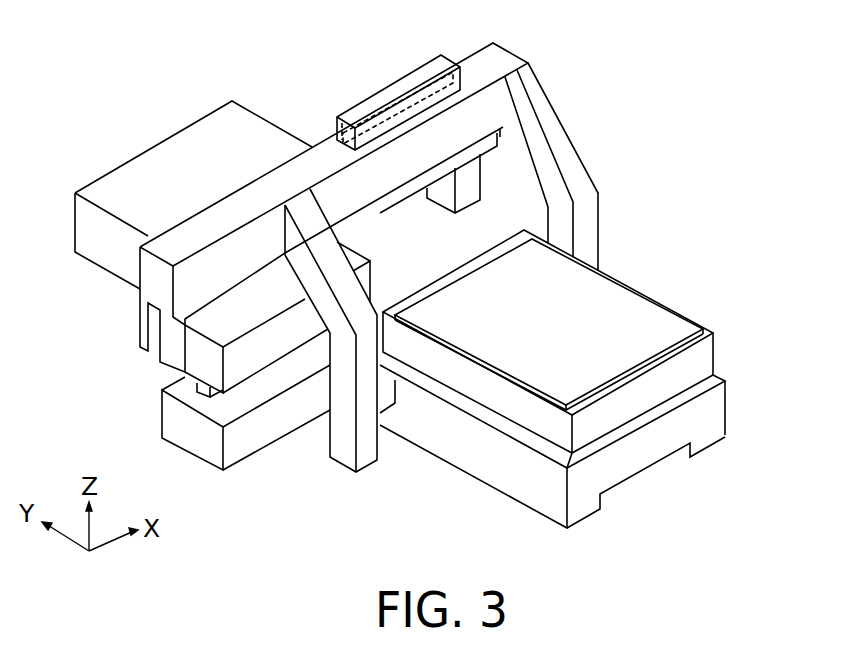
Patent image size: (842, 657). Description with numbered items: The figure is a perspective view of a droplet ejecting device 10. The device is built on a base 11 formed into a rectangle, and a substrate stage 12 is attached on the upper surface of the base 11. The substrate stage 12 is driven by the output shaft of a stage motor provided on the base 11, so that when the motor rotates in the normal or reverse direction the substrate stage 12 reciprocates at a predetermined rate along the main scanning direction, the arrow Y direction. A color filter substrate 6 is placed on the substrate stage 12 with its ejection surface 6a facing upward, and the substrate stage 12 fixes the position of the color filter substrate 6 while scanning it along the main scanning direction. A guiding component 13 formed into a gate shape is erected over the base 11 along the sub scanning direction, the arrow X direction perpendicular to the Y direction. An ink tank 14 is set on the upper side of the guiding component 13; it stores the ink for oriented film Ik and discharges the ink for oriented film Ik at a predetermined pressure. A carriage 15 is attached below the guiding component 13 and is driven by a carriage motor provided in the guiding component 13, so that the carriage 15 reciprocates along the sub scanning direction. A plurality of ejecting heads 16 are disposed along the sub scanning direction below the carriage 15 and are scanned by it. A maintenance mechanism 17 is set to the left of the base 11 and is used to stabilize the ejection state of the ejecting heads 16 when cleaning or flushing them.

The droplet ejecting device 10 is at (713, 105).
The base 11 is at (722, 412).
The substrate stage 12 is at (713, 353).
The color filter substrate 6 is at (673, 326).
The ejection surface 6a is at (630, 298).
The guiding component 13 is at (507, 56).
The ink tank 14 is at (423, 65).
The ink for oriented film Ik is at (378, 102).
The carriage 15 is at (242, 304).
The ejecting heads 16 is at (202, 403).
The maintenance mechanism 17 is at (212, 462).